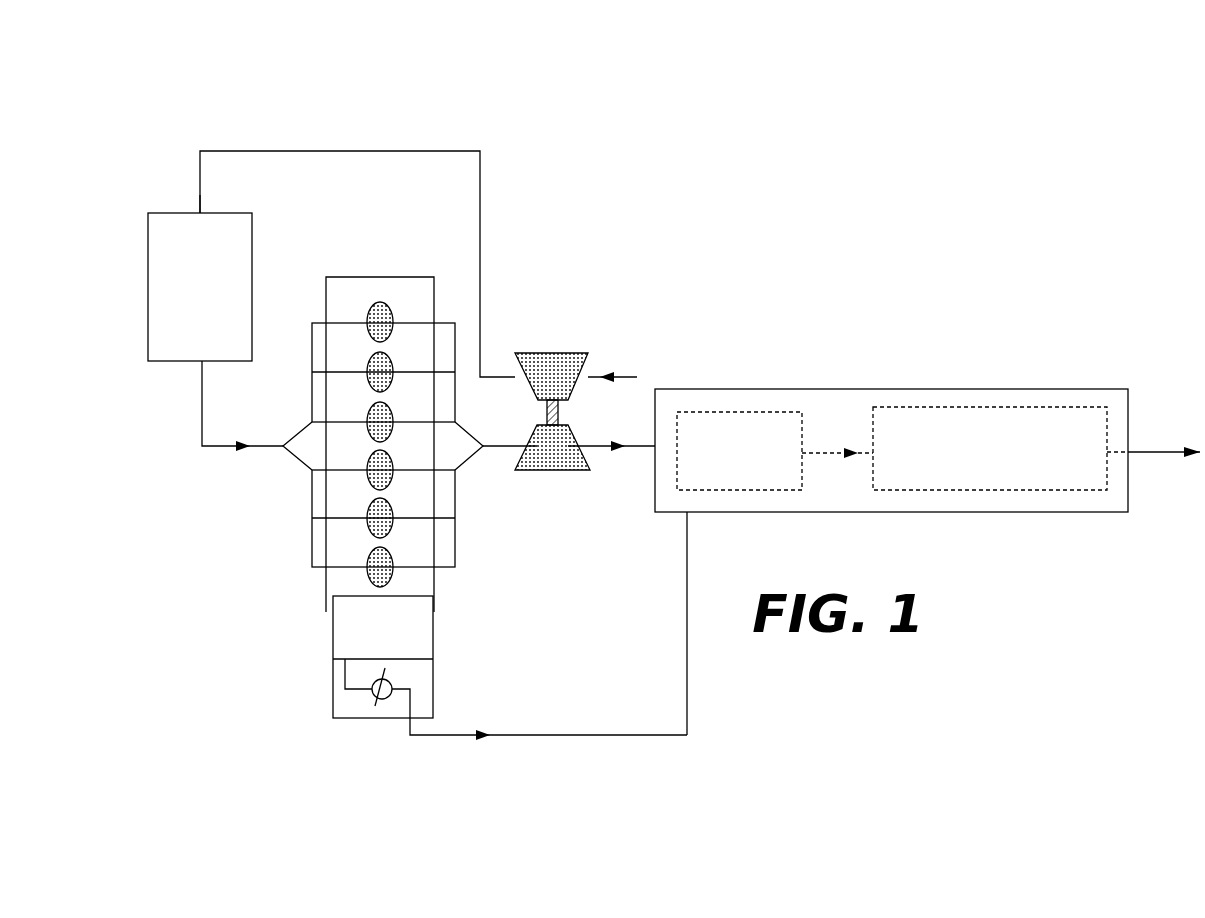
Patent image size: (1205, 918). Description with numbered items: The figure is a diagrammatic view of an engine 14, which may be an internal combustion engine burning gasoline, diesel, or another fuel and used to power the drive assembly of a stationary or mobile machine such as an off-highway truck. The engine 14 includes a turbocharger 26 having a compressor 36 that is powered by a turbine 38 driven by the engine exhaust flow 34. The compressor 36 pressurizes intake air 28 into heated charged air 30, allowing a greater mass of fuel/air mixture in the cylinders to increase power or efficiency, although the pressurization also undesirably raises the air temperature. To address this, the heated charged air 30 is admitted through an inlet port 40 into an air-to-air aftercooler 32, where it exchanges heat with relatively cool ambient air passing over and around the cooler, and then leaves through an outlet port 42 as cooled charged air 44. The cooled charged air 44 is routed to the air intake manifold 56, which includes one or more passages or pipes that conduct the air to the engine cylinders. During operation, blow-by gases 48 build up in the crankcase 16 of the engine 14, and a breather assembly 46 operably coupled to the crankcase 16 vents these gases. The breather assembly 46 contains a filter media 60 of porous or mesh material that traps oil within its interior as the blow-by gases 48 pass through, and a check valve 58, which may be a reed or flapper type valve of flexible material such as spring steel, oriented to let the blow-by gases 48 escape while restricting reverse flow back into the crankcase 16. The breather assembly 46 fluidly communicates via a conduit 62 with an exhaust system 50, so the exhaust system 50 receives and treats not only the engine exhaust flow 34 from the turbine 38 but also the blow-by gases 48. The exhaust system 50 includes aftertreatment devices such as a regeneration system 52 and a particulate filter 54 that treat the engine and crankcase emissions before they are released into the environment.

The engine 14 is at (523, 150).
The crankcase 16 is at (312, 553).
The turbocharger 26 is at (573, 450).
The intake air 28 is at (627, 377).
The heated charged air 30 is at (297, 151).
The air-to-air aftercooler 32 is at (200, 287).
The engine exhaust flow 34 is at (490, 455).
The compressor 36 is at (570, 360).
The turbine 38 is at (568, 470).
The inlet port 40 is at (200, 208).
The outlet port 42 is at (200, 363).
The cooled charged air 44 is at (215, 455).
The breather assembly 46 is at (333, 630).
The blow-by gases 48 is at (568, 735).
The exhaust system 50 is at (927, 435).
The regeneration system 52 is at (745, 490).
The particulate filter 54 is at (960, 492).
The air intake manifold 56 is at (285, 455).
The check valve 58 is at (388, 705).
The filter media 60 is at (410, 659).
The conduit 62 is at (662, 735).